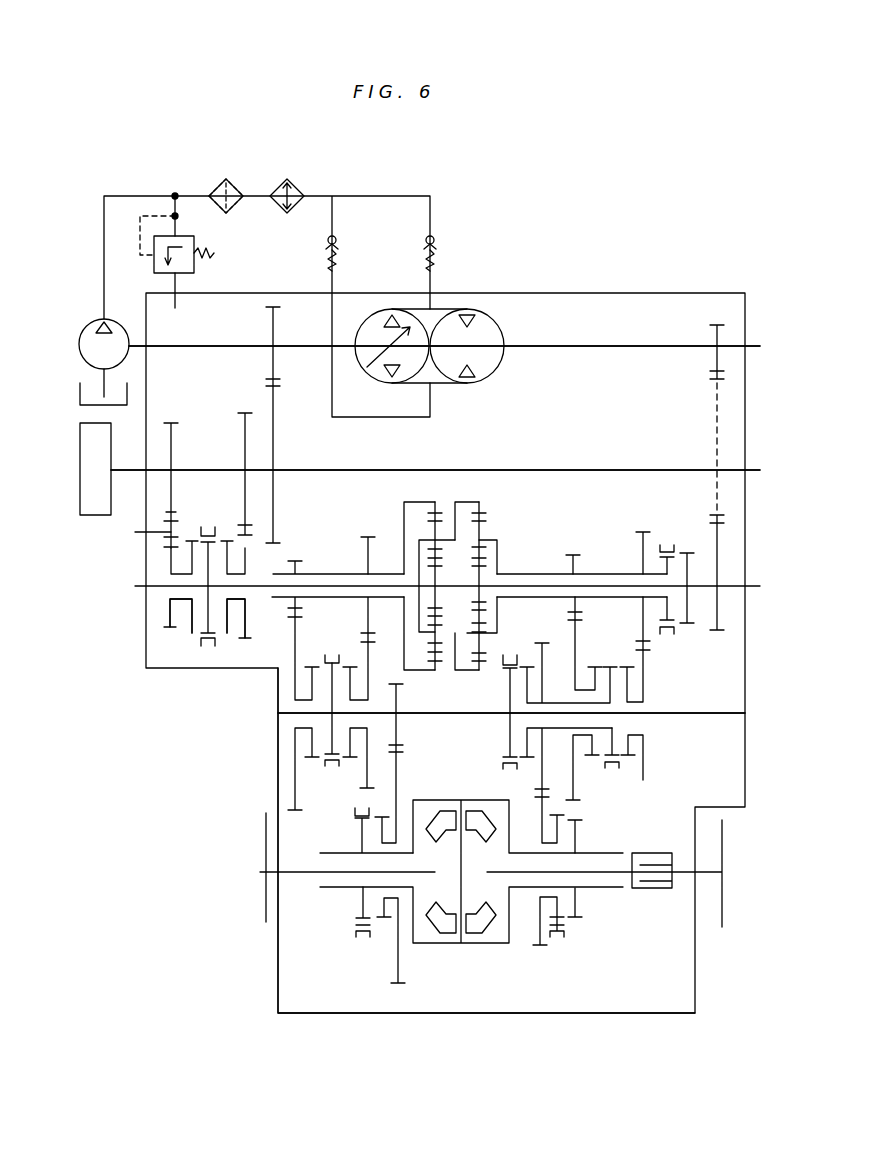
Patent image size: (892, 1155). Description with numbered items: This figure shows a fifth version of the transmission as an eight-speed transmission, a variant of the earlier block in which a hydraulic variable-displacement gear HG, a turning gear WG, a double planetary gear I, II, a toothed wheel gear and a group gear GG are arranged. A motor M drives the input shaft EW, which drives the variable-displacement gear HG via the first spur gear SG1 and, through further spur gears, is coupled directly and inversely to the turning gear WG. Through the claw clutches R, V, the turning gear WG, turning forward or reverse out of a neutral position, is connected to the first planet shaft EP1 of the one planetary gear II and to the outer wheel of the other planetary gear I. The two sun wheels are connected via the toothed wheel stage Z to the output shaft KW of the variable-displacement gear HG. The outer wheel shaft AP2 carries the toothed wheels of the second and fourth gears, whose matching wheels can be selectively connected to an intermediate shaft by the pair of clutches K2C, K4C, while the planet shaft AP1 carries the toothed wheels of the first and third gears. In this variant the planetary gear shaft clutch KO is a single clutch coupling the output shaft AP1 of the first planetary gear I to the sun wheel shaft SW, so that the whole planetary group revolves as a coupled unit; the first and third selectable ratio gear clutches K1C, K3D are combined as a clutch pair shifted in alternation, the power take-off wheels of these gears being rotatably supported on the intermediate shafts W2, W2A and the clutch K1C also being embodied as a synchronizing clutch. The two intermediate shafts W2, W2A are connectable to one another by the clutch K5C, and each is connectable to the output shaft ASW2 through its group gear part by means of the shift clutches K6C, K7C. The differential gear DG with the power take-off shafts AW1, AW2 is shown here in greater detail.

The motor M is at (82, 425).
The first spur gear SG1 is at (268, 388).
The output shaft of the variable-displacement gear KW is at (582, 350).
The hydraulic variable-displacement gear HG is at (490, 380).
The toothed wheel stage Z is at (715, 510).
The input shaft EW is at (320, 470).
The turning gear WG is at (226, 509).
The planetary gear II is at (435, 492).
The planetary gear I is at (484, 493).
The first planet shaft EP1 is at (302, 590).
The outer wheel shaft AP2 is at (352, 574).
The sun wheel shaft SW is at (542, 580).
The planet shaft AP1 is at (612, 574).
The claw clutch R is at (180, 637).
The claw clutch V is at (230, 637).
The planetary gear shaft clutch KO is at (668, 636).
The intermediate shaft W2 is at (424, 713).
The group gear GG is at (278, 756).
The intermediate shaft W2A is at (530, 732).
The clutch K5C is at (502, 768).
The third selectable ratio gear clutch K3D is at (632, 760).
The clutch K2C is at (310, 760).
The first selectable ratio gear clutch K1C is at (594, 760).
The clutch K4C is at (350, 770).
The power take-off shaft AW1 is at (266, 852).
The power take-off shaft AW2 is at (725, 895).
The shift clutch K6C is at (360, 940).
The output shaft ASW2 is at (436, 946).
The differential gear DG is at (490, 940).
The shift clutch K7C is at (560, 937).